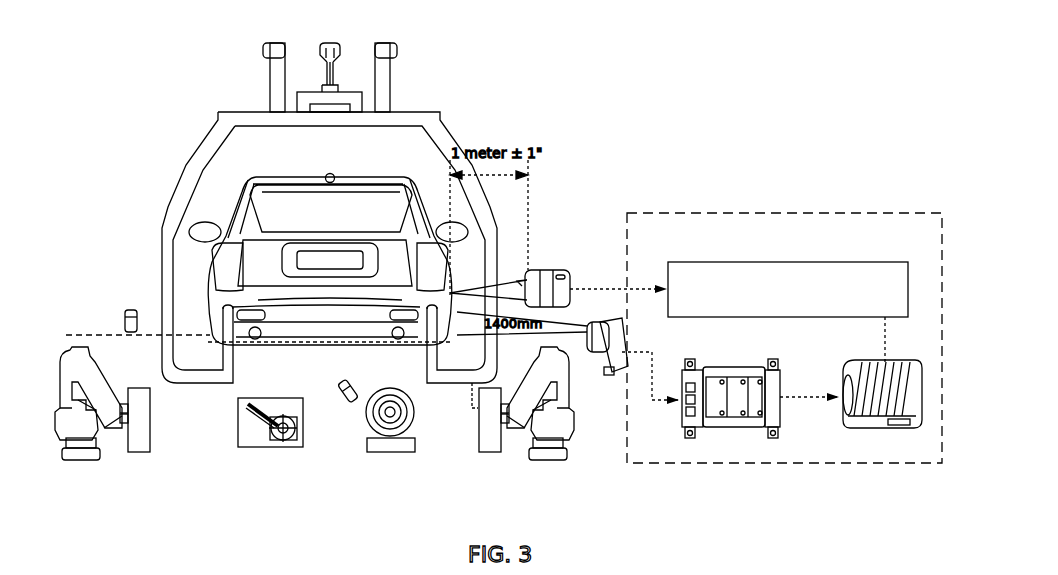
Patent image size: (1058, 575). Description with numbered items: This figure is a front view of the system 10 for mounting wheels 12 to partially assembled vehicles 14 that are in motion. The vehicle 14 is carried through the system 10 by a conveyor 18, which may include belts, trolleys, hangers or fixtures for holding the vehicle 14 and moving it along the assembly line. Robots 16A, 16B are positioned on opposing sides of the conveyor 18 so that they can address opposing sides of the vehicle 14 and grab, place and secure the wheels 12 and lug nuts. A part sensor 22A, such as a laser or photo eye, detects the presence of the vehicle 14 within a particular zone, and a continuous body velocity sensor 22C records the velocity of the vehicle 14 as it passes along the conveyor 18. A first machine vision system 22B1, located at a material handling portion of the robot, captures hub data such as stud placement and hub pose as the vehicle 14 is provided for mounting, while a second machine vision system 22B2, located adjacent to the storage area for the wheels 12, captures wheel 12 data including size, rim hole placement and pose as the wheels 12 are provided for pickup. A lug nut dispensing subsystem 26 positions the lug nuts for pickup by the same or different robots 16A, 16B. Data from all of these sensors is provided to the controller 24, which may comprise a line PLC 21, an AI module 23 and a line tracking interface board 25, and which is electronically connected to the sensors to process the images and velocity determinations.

The system 10 is at (727, 42).
The wheels 12 is at (425, 455).
The partially assembled vehicle 14 is at (221, 238).
The first robot 16A is at (83, 322).
The second robot 16B is at (565, 440).
The conveyor 18 is at (445, 65).
The line PLC 21 is at (730, 385).
The part sensor 22A is at (125, 300).
The first machine vision system 22B1 is at (632, 330).
The second machine vision system 22B2 is at (343, 413).
The continuous body velocity sensor 22C is at (562, 247).
The AI module 23 is at (862, 362).
The controller 24 is at (783, 213).
The line tracking interface board 25 is at (795, 300).
The lug nut dispensing subsystem 26 is at (230, 427).